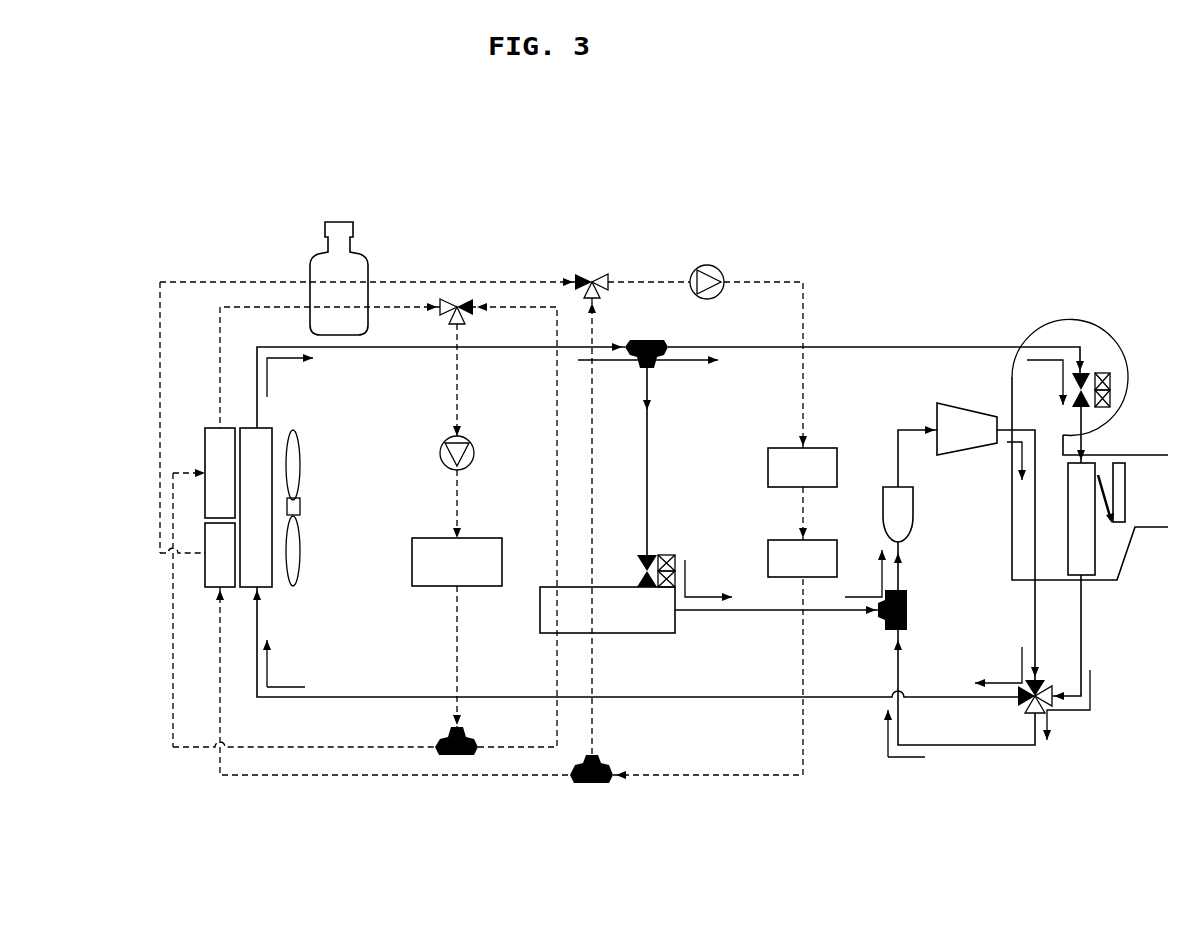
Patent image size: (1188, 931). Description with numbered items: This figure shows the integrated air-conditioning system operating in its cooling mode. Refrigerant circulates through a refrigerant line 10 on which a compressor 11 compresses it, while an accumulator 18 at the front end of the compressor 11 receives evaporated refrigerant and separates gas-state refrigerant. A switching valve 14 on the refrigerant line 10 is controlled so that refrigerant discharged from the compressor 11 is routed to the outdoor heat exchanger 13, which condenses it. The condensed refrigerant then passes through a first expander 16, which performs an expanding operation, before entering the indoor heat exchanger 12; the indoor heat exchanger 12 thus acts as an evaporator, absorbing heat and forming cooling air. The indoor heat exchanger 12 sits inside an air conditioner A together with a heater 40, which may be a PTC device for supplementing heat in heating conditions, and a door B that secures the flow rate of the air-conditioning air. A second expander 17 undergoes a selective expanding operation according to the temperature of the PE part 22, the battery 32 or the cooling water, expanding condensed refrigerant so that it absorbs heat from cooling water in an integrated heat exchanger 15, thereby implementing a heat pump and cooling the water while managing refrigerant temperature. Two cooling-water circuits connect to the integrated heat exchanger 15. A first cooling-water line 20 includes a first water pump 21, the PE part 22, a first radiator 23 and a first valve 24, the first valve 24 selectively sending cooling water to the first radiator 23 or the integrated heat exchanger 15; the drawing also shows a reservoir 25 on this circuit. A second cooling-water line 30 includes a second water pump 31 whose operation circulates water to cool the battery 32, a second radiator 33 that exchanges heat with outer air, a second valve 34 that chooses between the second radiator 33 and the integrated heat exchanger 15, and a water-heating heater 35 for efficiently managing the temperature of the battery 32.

The refrigerant line 10 is at (885, 347).
The compressor 11 is at (937, 412).
The indoor heat exchanger 12 is at (1088, 560).
The outdoor heat exchanger 13 is at (265, 430).
The switching valve 14 is at (1022, 712).
The integrated heat exchanger 15 is at (675, 628).
The first expander 16 is at (1105, 372).
The second expander 17 is at (667, 555).
The accumulator 18 is at (913, 513).
The first cooling-water line 20 is at (457, 648).
The first water pump 21 is at (440, 455).
The PE part 22 is at (412, 562).
The first radiator 23 is at (212, 428).
The first valve 24 is at (457, 299).
The reservoir tank 25 is at (312, 258).
The second cooling-water line 30 is at (800, 282).
The second water pump 31 is at (707, 265).
The battery 32 is at (775, 448).
The second radiator 33 is at (212, 588).
The second valve 34 is at (592, 274).
The water-heating heater 35 is at (775, 540).
The heater 40 is at (1120, 462).
The air conditioner A is at (1067, 320).
The door B is at (1105, 498).